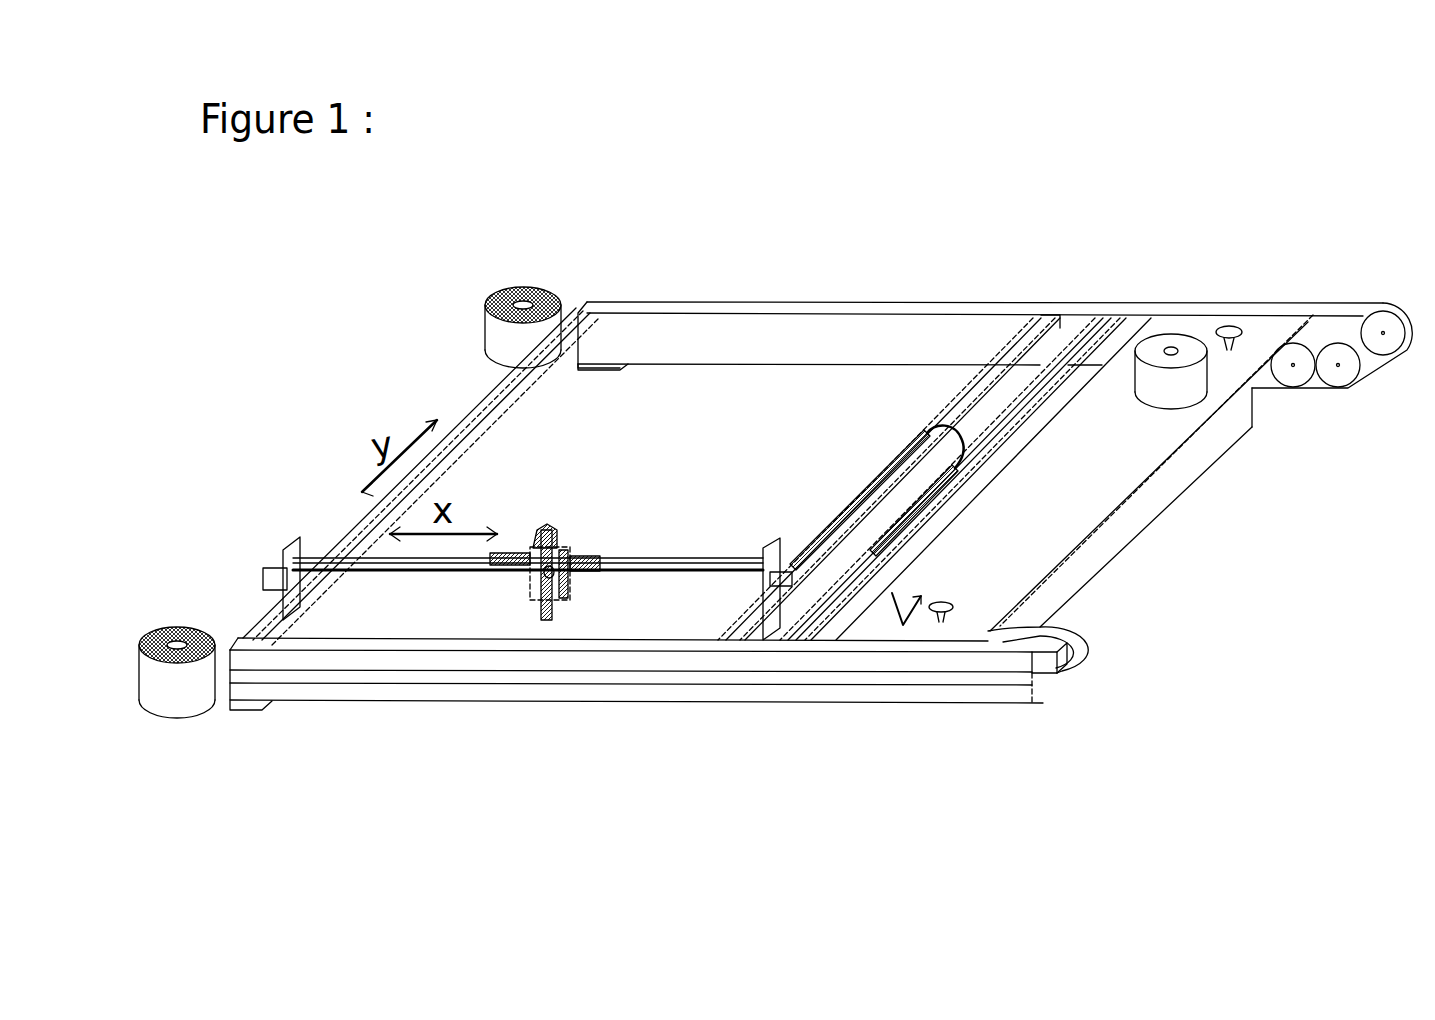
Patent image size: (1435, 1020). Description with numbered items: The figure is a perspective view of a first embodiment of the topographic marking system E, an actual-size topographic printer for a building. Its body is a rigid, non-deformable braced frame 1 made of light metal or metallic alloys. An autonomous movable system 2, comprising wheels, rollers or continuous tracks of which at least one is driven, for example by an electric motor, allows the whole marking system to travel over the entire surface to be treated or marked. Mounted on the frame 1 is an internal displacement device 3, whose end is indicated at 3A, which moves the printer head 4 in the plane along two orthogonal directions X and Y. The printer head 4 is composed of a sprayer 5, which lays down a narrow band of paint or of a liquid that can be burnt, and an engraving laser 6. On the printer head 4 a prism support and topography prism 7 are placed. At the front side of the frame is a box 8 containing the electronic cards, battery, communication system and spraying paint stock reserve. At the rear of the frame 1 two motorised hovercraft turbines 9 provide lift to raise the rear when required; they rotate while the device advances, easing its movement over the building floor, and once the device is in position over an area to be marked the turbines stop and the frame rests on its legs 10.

The installation E is at (980, 262).
The braced frame 1 is at (475, 677).
The autonomous movable system 2 is at (1396, 352).
The internal displacement device 3 is at (670, 557).
The bar end 3A is at (263, 578).
The printer head 4 is at (530, 588).
The sprayer 5 is at (565, 600).
The engraving laser 6 is at (585, 556).
The prism support and topography prism 7 is at (547, 540).
The box 8 is at (1060, 500).
The motorised hovercraft turbines 9 is at (483, 336).
The legs 10 is at (614, 366).